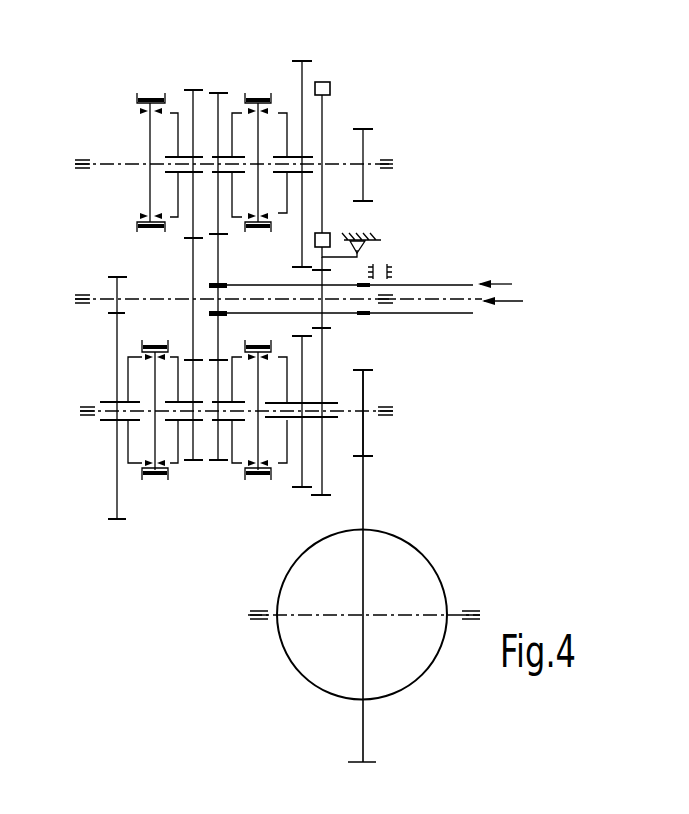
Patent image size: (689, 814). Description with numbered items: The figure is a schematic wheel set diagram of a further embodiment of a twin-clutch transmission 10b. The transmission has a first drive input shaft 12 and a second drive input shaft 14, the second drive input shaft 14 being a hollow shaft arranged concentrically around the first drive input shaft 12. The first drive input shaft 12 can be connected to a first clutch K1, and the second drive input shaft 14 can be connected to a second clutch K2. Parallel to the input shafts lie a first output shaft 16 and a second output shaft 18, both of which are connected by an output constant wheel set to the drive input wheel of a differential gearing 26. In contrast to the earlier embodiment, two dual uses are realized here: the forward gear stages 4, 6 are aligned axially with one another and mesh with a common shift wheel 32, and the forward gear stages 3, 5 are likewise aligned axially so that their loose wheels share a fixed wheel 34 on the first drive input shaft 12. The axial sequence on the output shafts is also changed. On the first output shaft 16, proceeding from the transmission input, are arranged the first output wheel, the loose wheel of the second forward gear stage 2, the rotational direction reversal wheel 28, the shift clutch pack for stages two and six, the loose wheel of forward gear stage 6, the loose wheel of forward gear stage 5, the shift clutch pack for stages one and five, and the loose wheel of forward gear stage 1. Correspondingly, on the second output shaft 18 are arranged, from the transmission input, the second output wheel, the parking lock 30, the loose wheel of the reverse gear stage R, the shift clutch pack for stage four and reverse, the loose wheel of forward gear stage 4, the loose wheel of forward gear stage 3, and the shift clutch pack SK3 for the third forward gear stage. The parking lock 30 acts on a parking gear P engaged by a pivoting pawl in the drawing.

The forward gear stage 1 is at (121, 412).
The forward gear stage 2 is at (302, 429).
The forward gear stage 3 is at (184, 151).
The forward gear stage 4 is at (227, 149).
The forward gear stage 5 is at (184, 424).
The forward gear stage 6 is at (227, 424).
The twin-clutch transmission 10b is at (524, 164).
The first drive input shaft 12 is at (453, 300).
The second drive input shaft 14 is at (455, 284).
The first output shaft 16 is at (367, 412).
The second output shaft 18 is at (372, 163).
The differential gearing 26 is at (440, 569).
The rotational direction reversal wheel 28 is at (302, 473).
The parking lock 30 is at (330, 85).
The common shift wheel 32 is at (217, 254).
The fixed wheel 34 is at (193, 276).
The reverse gear stage R is at (290, 158).
The parking lock gear P is at (321, 272).
The first clutch K1 is at (519, 306).
The second clutch K2 is at (517, 277).
The shift clutch pack SK3 is at (150, 94).